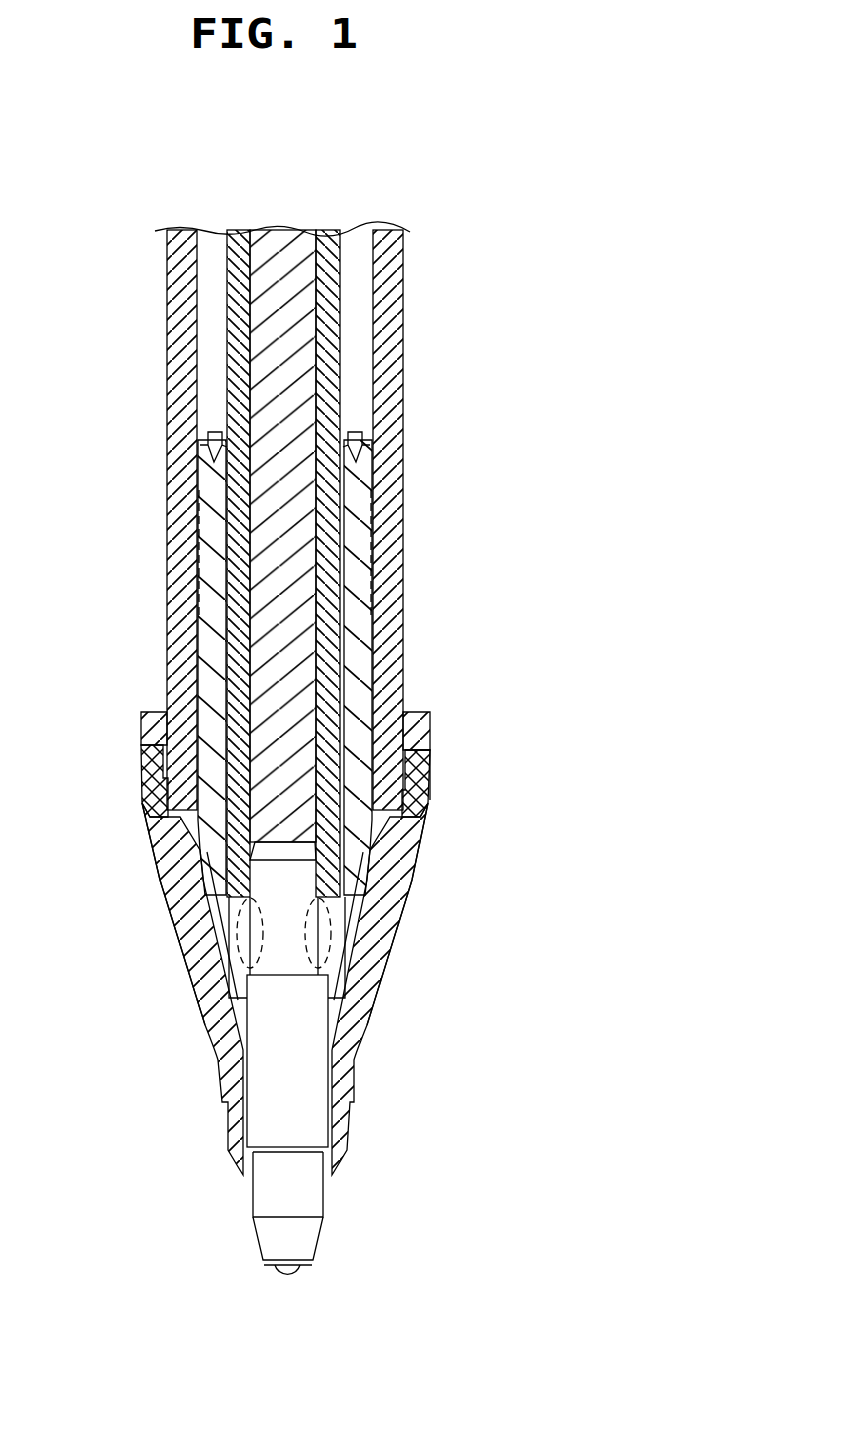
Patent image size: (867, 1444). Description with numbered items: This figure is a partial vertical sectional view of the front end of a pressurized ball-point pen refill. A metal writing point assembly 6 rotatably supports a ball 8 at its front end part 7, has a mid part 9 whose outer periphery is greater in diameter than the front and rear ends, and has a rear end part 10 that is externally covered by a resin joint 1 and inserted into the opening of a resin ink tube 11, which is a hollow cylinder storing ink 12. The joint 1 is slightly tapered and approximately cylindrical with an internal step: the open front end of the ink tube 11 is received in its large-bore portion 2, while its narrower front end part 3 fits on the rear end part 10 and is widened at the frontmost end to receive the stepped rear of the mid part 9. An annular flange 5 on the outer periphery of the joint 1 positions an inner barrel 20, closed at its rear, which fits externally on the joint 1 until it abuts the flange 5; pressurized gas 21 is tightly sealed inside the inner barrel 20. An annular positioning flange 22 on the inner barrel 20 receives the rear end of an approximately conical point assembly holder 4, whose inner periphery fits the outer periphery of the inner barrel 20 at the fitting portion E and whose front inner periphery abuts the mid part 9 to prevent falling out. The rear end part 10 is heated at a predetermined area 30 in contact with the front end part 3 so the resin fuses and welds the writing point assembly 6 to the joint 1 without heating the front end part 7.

The joint 1 is at (356, 600).
The large-bore portion 2 is at (215, 560).
The front end part 3 is at (352, 988).
The point assembly holder 4 is at (212, 1010).
The annular flange 5 is at (186, 822).
The writing point assembly 6 is at (300, 1207).
The front end part 7 is at (270, 1233).
The ball 8 is at (286, 1279).
The mid part 9 is at (273, 1058).
The rear end part 10 is at (289, 946).
The ink tube 11 is at (368, 443).
The ink 12 is at (296, 248).
The inner barrel 20 is at (178, 315).
The pressurized gas 21 is at (356, 336).
The positioning flange 22 is at (430, 713).
The predetermined area 30 is at (246, 936).
The fitting portion E is at (431, 764).